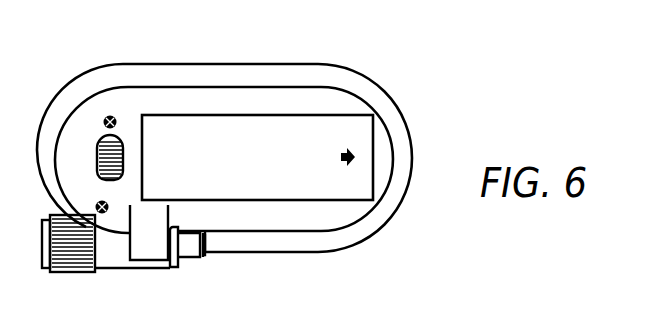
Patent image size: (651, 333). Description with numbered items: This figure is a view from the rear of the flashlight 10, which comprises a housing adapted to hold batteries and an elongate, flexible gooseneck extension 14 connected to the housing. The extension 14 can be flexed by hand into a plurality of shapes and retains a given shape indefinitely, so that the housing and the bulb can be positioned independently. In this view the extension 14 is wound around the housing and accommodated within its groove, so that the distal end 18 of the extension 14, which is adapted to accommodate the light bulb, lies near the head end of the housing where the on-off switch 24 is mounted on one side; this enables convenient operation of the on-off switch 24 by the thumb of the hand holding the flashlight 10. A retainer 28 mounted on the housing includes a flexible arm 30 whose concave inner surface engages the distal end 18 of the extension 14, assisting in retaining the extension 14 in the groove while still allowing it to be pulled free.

The flashlight 10 is at (157, 58).
The extension 14 is at (409, 128).
The distal end 18 is at (63, 278).
The on-off switch 24 is at (96, 152).
The retainer 28 is at (160, 280).
The arm 30 is at (145, 234).